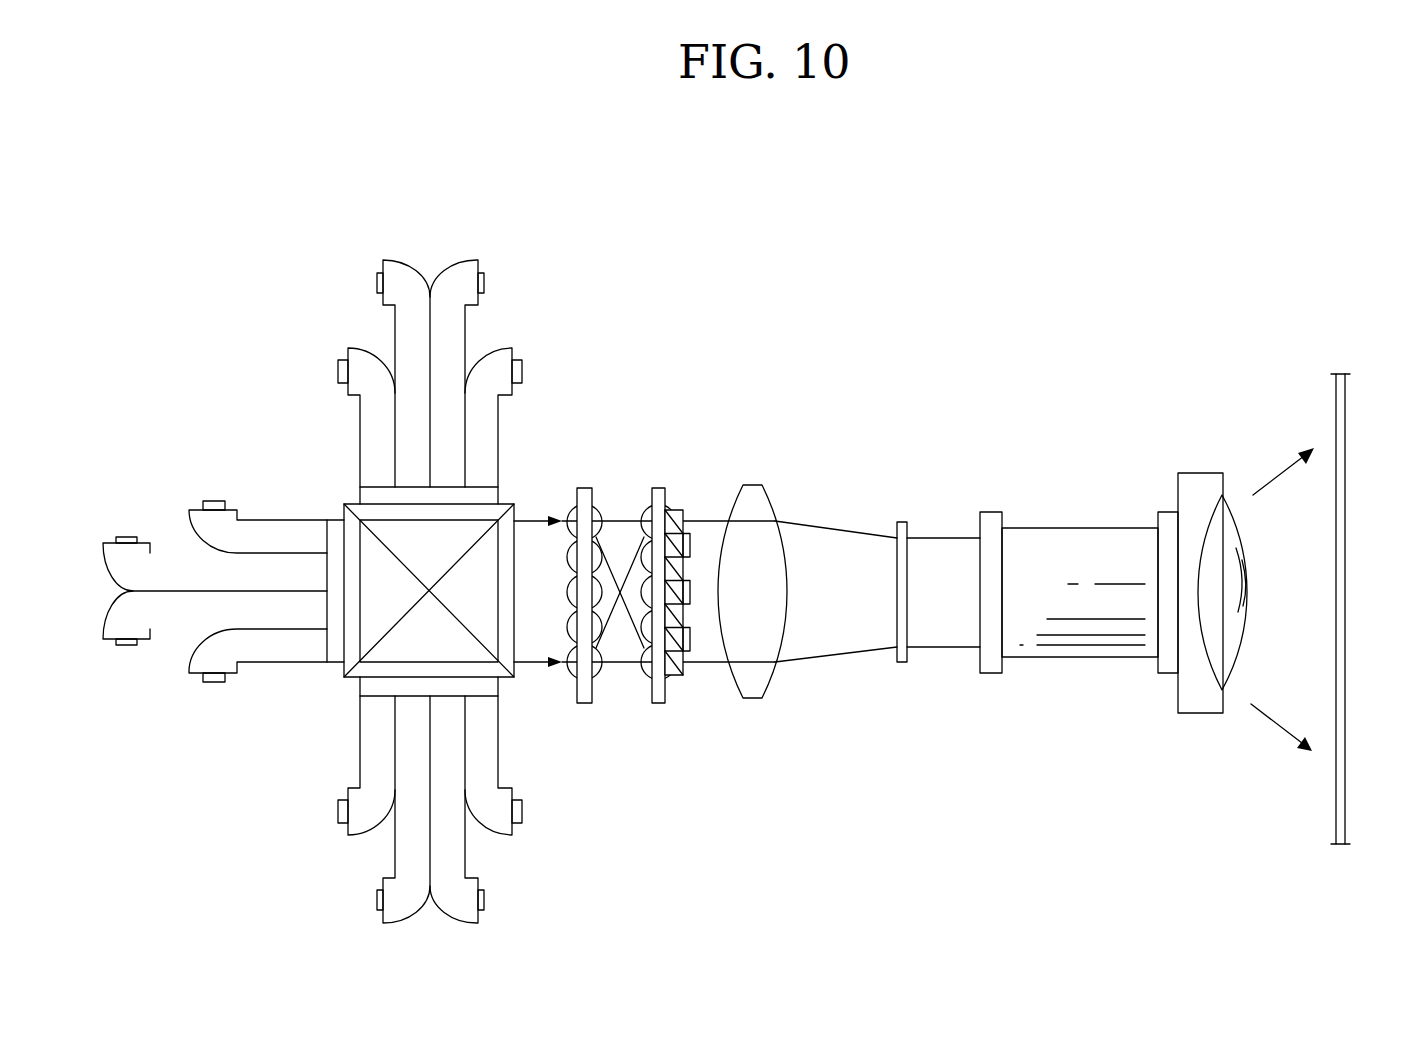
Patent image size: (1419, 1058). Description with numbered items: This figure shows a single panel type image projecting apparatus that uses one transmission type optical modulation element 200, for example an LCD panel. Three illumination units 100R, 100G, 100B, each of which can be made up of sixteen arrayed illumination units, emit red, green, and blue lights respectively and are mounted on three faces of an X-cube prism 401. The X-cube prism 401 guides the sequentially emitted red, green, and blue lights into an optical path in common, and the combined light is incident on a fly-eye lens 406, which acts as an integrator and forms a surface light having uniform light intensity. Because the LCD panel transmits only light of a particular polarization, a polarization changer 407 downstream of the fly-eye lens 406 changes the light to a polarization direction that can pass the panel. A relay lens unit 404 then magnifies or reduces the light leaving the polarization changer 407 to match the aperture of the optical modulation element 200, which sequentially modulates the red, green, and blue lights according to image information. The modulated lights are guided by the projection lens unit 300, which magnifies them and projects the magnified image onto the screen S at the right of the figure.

The illumination unit 100B is at (360, 443).
The illumination unit 100G is at (280, 662).
The illumination unit 100R is at (500, 742).
The X-cube prism 401 is at (513, 553).
The fly-eye lens 406 is at (620, 503).
The polarization changer 407 is at (680, 668).
The relay lens unit 404 is at (752, 485).
The optical modulation element 200 is at (902, 522).
The projection lens unit 300 is at (1104, 498).
The screen S is at (1345, 620).